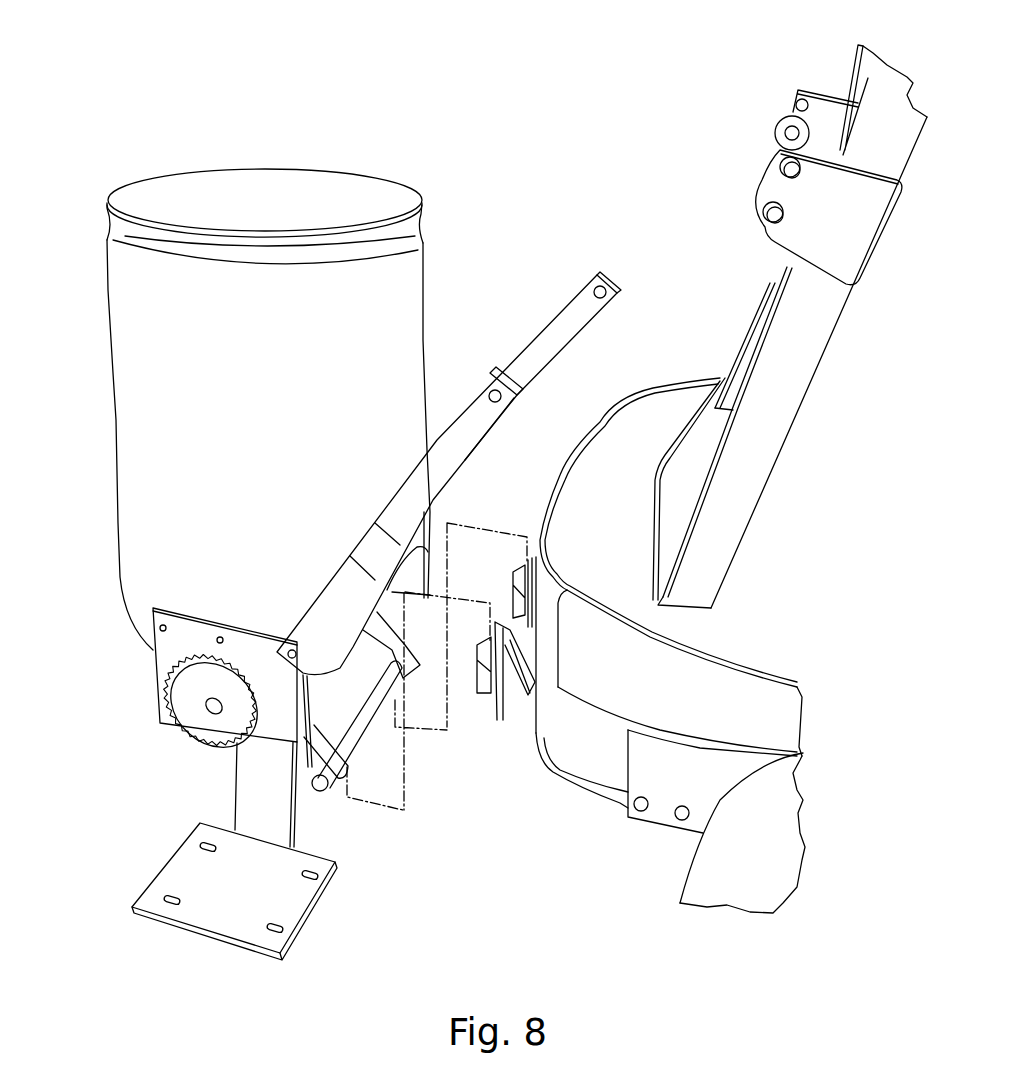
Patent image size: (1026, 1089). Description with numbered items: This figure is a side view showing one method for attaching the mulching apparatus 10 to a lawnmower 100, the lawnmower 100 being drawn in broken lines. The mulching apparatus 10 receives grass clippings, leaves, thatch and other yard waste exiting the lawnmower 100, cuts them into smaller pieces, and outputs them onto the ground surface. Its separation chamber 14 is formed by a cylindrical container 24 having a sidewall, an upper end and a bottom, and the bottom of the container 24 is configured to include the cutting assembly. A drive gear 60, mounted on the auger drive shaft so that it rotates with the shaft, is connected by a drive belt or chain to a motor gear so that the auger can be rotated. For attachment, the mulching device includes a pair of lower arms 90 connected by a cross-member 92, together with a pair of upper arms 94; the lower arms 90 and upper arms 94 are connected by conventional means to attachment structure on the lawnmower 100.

The mulching apparatus 10 is at (308, 120).
The separation chamber 14 is at (327, 328).
The cylindrical container 24 is at (193, 470).
The drive gear 60 is at (195, 708).
The lower arms 90 is at (313, 775).
The cross-member 92 is at (362, 733).
The upper arms 94 is at (442, 480).
The lawnmower 100 is at (698, 787).